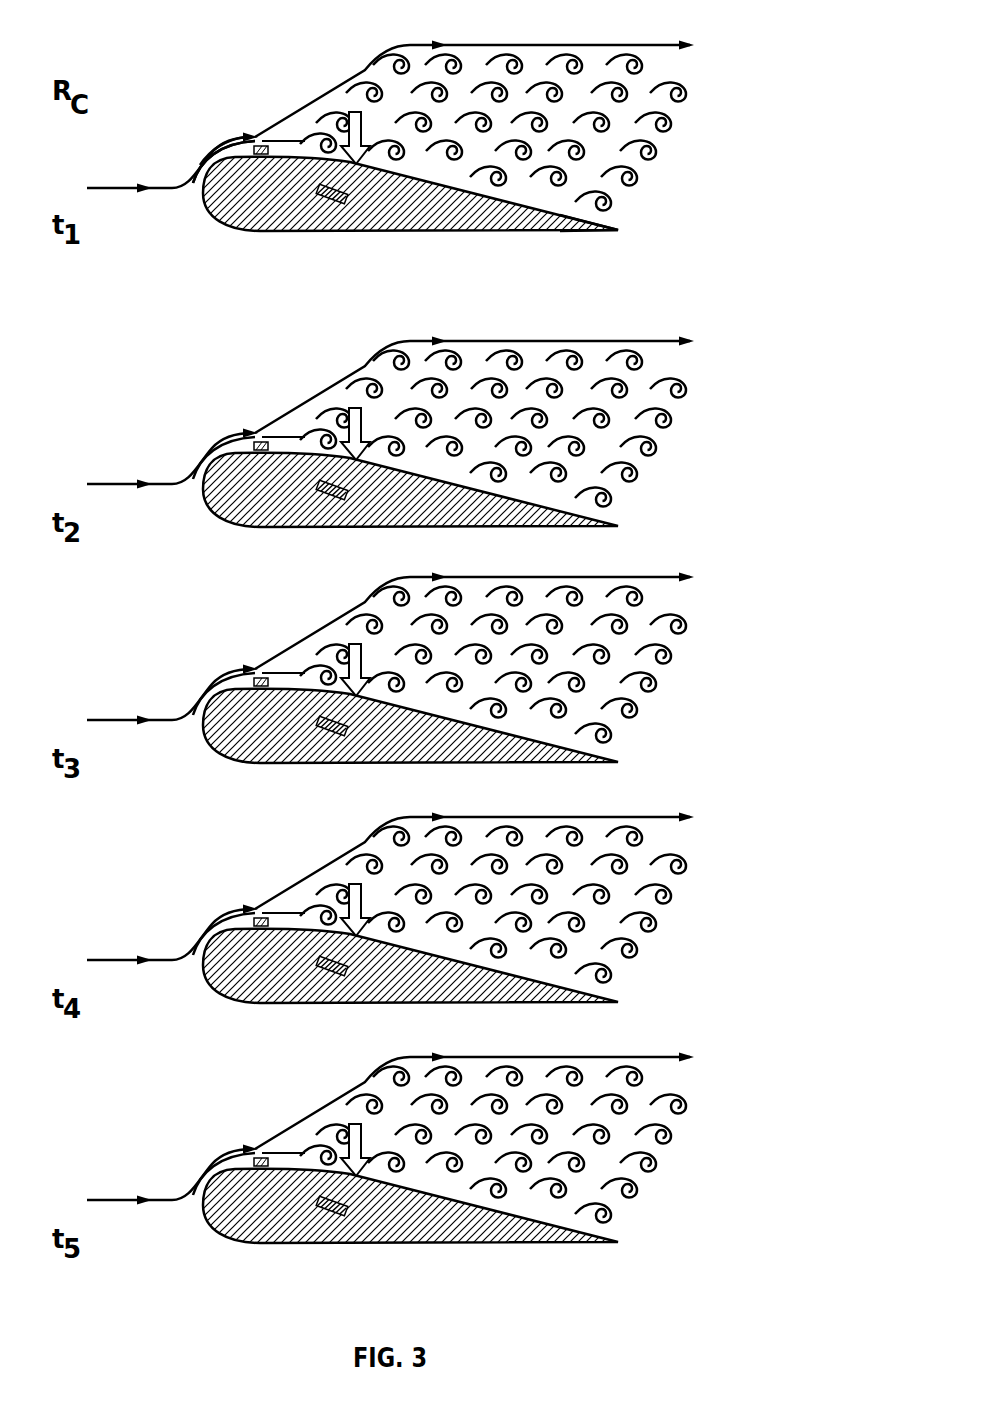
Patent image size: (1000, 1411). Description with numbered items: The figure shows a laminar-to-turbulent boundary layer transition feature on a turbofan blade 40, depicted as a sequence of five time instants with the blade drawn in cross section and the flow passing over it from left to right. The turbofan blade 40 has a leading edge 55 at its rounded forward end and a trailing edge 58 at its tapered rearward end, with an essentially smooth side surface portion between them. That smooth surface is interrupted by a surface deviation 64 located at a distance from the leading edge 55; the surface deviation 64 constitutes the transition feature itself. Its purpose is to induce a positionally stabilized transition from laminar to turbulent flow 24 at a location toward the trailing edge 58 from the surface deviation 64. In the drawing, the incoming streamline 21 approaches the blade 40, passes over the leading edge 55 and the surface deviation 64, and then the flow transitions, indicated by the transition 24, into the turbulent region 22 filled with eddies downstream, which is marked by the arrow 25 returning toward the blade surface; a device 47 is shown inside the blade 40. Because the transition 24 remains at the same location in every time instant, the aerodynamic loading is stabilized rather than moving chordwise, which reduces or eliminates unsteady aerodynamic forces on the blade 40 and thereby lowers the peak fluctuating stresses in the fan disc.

The freestream flow streamline 21 is at (242, 134).
The turbulent wake region 22 is at (634, 58).
The laminar-to-turbulent boundary layer transition 24 is at (360, 43).
The flow reattachment direction 25 is at (348, 113).
The turbofan blade 40 is at (268, 229).
The actuator 47 is at (327, 187).
The leading edge 55 is at (203, 186).
The trailing edge 58 is at (618, 232).
The surface deviation 64 is at (263, 142).